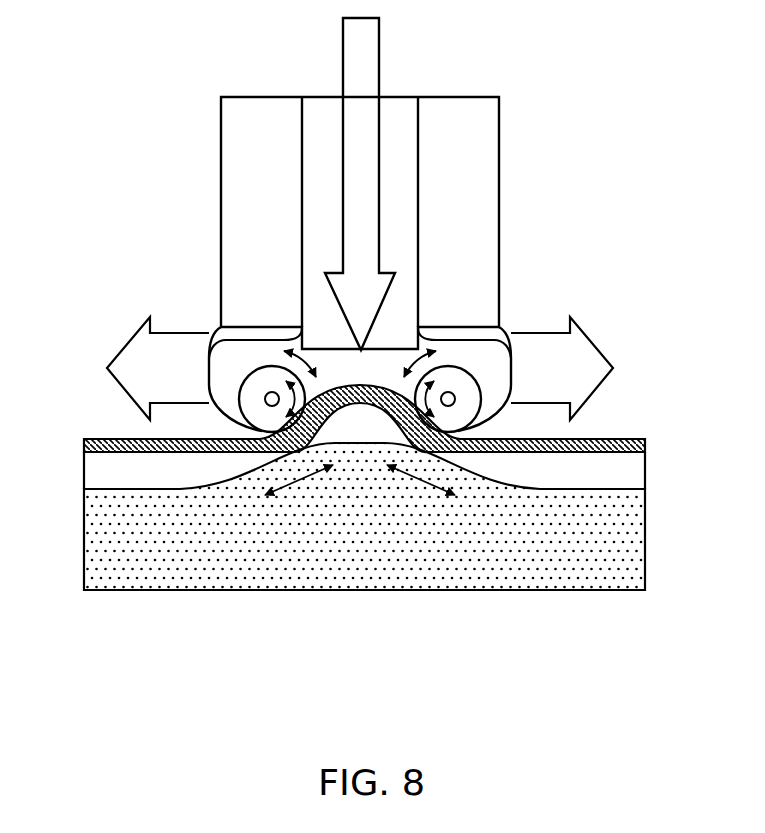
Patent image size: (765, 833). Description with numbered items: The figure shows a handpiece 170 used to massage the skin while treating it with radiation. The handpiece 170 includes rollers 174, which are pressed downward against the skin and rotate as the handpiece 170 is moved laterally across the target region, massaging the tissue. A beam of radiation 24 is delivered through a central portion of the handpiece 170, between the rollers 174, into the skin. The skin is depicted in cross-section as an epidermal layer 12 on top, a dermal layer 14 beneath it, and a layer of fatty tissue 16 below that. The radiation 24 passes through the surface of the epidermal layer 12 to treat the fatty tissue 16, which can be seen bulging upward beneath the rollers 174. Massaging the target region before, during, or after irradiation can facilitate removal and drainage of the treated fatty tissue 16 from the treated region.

The radiation 24 is at (379, 39).
The handpiece 170 is at (467, 202).
The rollers 174 is at (250, 400).
The epidermal layer 12 is at (643, 444).
The dermal layer 14 is at (635, 480).
The fatty tissue 16 is at (152, 570).